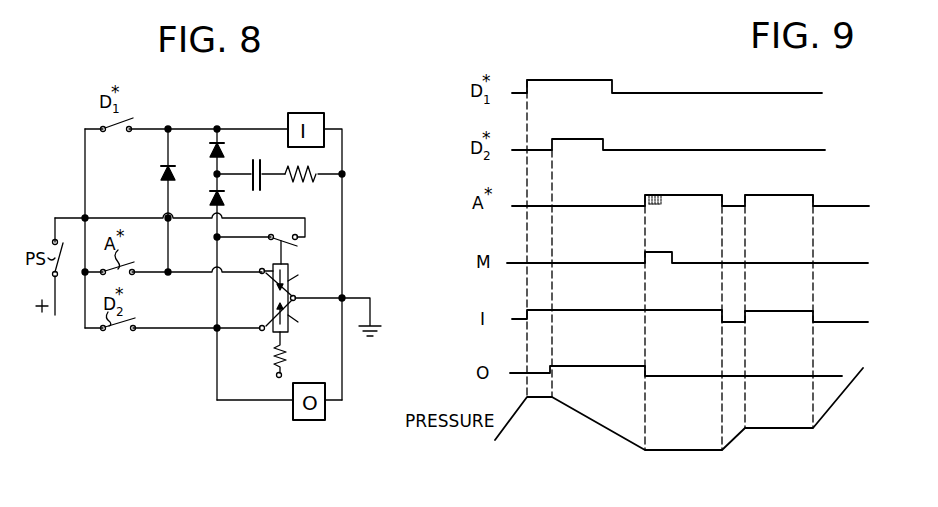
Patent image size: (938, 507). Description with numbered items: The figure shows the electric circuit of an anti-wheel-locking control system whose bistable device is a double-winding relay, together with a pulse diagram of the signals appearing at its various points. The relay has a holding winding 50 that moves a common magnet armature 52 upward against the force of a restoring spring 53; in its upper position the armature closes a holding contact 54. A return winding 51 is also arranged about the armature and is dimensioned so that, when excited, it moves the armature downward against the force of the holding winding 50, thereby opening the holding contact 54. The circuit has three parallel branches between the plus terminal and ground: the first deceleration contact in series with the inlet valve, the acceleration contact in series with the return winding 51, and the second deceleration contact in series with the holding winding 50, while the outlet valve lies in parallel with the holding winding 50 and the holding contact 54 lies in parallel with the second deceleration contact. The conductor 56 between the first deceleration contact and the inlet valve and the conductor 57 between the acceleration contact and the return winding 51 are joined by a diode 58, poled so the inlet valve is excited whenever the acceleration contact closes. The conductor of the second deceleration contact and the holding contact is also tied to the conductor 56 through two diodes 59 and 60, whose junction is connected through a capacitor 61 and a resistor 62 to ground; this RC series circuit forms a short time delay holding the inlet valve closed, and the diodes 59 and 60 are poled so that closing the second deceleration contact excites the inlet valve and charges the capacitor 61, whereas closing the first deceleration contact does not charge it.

The holding winding 50 is at (273, 320).
The return winding 51 is at (272, 290).
The common magnet armature 52 is at (290, 286).
The restoring spring 53 is at (286, 354).
The holding contact 54 is at (298, 249).
The conductor 56 is at (210, 126).
The conductor 57 is at (179, 276).
The diode 58 is at (161, 176).
The diode 59 is at (210, 199).
The diode 60 is at (210, 152).
The capacitor 61 is at (262, 183).
The resistor 62 is at (299, 180).